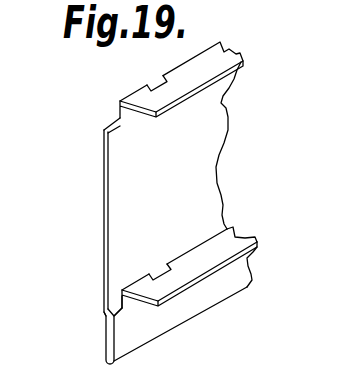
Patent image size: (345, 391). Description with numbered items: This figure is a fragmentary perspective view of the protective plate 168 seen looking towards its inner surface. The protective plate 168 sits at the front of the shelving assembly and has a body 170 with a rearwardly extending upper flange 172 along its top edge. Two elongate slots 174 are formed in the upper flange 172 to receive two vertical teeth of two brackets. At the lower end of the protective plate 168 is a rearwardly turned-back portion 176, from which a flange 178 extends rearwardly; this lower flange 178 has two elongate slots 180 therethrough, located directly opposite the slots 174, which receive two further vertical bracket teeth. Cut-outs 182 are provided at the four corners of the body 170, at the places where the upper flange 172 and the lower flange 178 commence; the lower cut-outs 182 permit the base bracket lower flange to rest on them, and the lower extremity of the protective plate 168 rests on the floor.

The protective plate 168 is at (232, 184).
The body 170 is at (208, 137).
The upper flange 172 is at (218, 65).
The elongate slots 174 is at (150, 83).
The turn-back portion 176 is at (235, 267).
The flange 178 is at (237, 233).
The elongate slots 180 is at (155, 271).
The cut-outs 182 is at (113, 128).